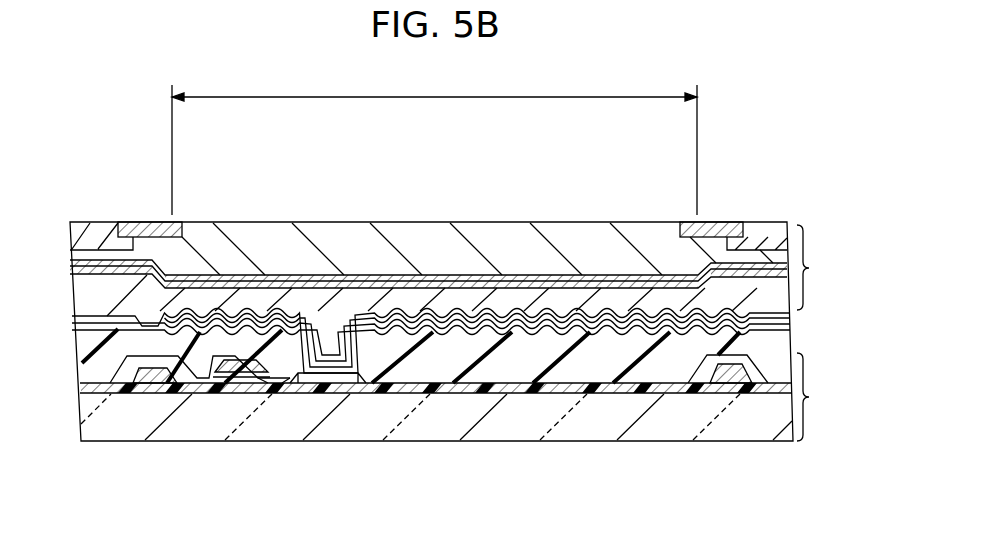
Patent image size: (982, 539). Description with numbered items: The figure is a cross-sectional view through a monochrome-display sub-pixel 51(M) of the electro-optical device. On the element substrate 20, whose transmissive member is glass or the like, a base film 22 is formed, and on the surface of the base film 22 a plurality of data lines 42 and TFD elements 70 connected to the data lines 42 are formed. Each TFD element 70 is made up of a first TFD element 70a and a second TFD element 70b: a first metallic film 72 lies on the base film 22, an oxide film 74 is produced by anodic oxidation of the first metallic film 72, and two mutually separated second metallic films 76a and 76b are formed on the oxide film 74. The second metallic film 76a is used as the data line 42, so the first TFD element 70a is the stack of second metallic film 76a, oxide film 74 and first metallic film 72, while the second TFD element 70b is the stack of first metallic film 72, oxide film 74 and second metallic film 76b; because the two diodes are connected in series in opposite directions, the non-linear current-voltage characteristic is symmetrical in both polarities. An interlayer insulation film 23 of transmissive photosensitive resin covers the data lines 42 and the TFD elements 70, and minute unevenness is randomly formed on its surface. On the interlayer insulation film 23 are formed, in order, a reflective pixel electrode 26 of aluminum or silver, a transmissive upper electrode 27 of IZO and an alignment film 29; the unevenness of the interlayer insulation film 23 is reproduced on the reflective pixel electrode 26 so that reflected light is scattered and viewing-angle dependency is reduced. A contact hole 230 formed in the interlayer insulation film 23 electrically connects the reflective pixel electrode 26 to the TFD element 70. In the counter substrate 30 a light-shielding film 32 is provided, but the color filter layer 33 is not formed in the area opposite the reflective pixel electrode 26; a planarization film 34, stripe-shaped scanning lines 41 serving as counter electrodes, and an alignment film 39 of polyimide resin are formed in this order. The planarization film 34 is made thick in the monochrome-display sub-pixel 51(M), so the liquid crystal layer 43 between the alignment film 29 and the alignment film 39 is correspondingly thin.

The element substrate 20 is at (460, 397).
The base film 22 is at (518, 390).
The interlayer insulation film 23 is at (574, 374).
The reflective pixel electrode 26 is at (603, 334).
The transmissive upper electrode 27 is at (630, 326).
The alignment film 29 is at (646, 318).
The counter substrate 30 is at (454, 331).
The light-shielding film 32 is at (152, 222).
The color filter layer 33 is at (105, 222).
The planarization film 34 is at (548, 232).
The alignment film 39 is at (660, 277).
The scanning lines 41 is at (578, 275).
The liquid crystal layer 43 is at (458, 300).
The monochrome-display sub-pixel 51 is at (434, 143).
The TFD element 70 is at (217, 163).
The first TFD element 70a is at (217, 342).
The second TFD element 70b is at (280, 342).
The first metallic film 72 is at (262, 375).
The oxide film 74 is at (237, 378).
The second metallic film 76a is at (206, 388).
The second metallic film 76b is at (298, 380).
The contact hole 230 is at (358, 372).
The data line 42 is at (148, 394).